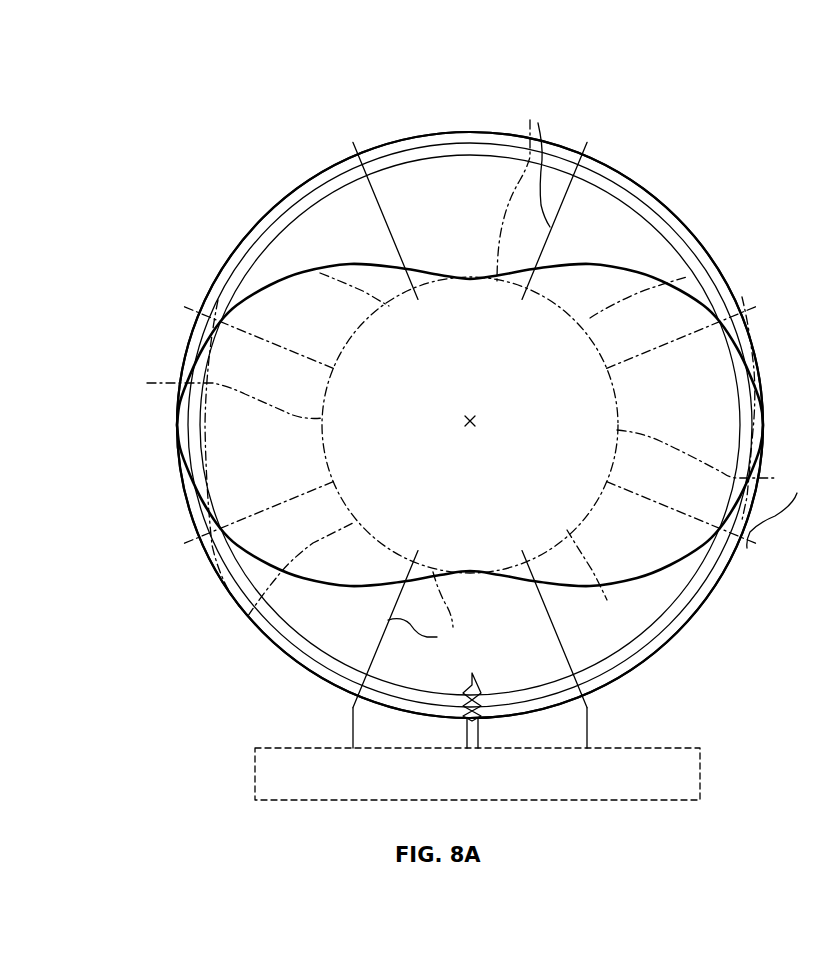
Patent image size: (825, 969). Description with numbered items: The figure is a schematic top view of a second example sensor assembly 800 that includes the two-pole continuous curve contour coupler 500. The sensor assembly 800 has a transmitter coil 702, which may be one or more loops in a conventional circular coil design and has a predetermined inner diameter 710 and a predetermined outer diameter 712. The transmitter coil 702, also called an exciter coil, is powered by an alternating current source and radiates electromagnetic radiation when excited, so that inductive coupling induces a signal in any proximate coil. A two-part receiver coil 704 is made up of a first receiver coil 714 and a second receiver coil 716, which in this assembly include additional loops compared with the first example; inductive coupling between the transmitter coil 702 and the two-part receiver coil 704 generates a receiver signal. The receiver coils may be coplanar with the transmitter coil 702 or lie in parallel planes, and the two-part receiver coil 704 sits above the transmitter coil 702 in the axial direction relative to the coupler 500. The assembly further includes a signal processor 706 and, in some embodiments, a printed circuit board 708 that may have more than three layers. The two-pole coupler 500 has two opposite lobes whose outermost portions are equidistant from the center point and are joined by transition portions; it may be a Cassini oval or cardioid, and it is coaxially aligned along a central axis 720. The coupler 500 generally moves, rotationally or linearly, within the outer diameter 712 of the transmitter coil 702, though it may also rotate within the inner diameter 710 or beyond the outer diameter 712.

The second example sensor assembly 800 is at (207, 158).
The two-pole continuous curve contour coupler 500 is at (251, 293).
The transmitter coil 702 is at (189, 518).
The two-part receiver coil 704 is at (470, 279).
The signal processor 706 is at (700, 780).
The printed circuit board 708 is at (347, 203).
The inner diameter 710 is at (390, 163).
The outer diameter 712 is at (493, 133).
The first receiver coil 714 is at (462, 375).
The second receiver coil 716 is at (386, 220).
The central axis 720 is at (470, 431).